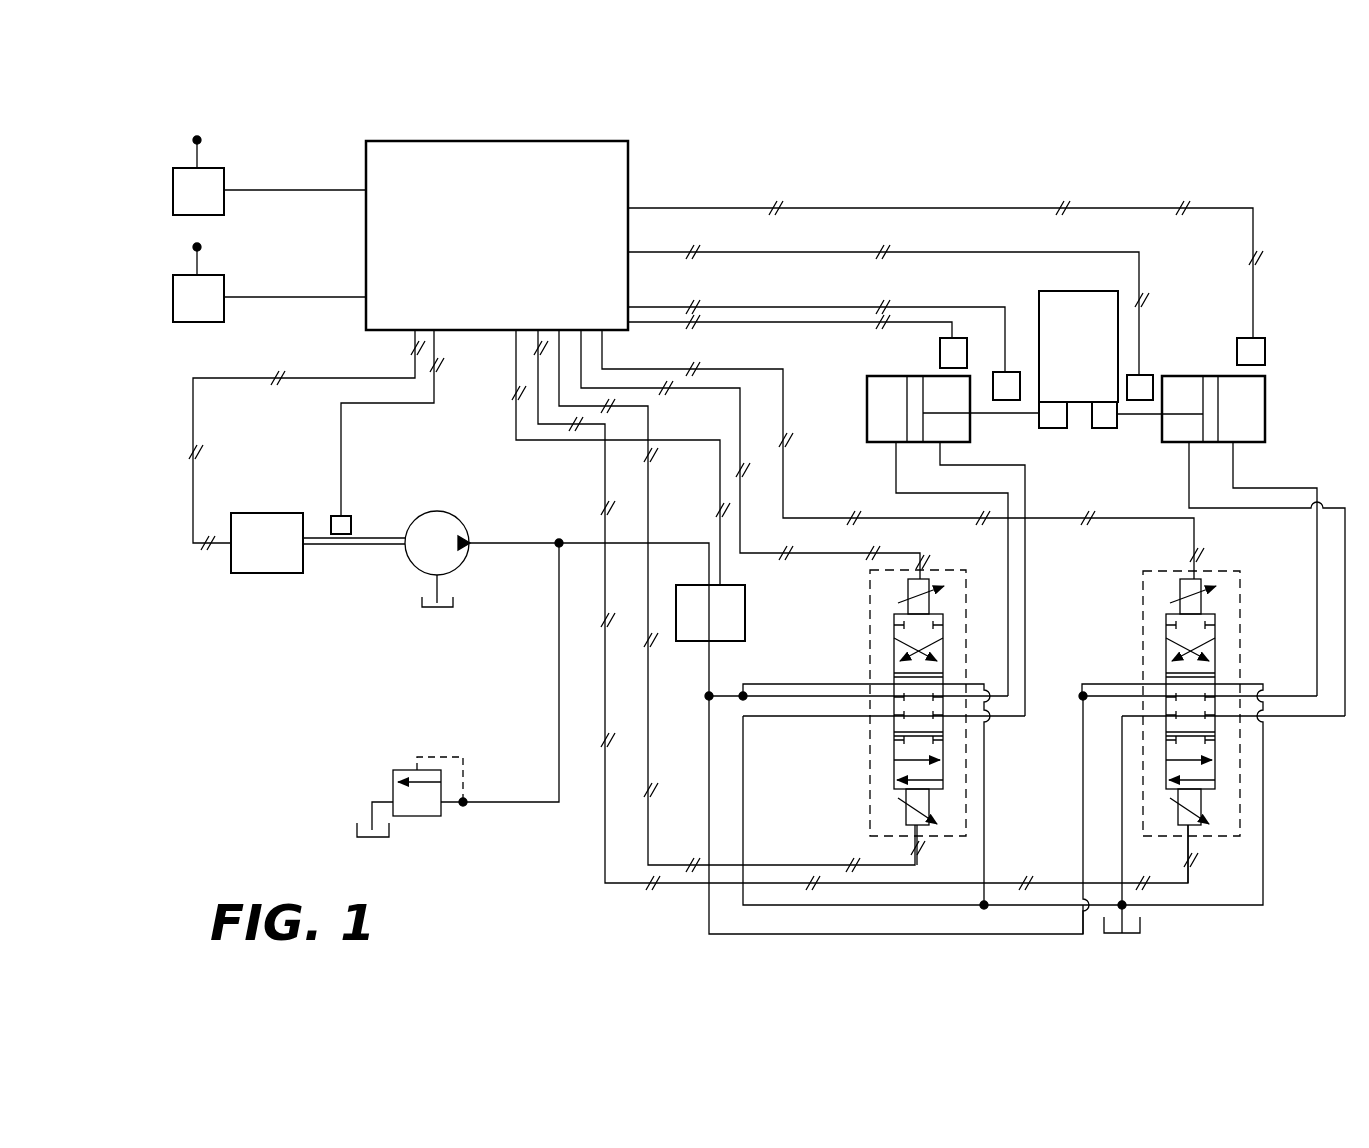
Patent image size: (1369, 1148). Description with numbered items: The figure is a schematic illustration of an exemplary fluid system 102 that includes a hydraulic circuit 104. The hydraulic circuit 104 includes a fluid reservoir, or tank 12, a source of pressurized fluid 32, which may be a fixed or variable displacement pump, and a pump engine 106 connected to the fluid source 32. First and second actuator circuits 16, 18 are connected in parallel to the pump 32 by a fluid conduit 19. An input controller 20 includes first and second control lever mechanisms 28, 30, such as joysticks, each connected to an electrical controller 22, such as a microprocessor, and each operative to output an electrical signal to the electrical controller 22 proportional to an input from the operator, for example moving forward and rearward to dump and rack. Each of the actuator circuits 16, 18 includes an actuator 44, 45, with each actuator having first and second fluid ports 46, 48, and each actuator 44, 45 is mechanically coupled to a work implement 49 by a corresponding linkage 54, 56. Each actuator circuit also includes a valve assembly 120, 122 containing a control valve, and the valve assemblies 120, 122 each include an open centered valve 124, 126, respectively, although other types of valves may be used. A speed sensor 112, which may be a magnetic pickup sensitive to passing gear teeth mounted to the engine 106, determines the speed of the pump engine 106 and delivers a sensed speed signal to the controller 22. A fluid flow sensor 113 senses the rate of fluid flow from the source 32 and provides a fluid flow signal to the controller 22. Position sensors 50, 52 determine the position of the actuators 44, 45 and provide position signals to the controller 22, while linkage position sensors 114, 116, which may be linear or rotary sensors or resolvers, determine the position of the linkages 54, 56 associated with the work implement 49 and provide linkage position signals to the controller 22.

The fluid system 102 is at (160, 127).
The input controller 20 is at (269, 235).
The first control lever mechanism 28 is at (224, 182).
The second control lever mechanism 30 is at (213, 322).
The electrical controller 22 is at (505, 239).
The hydraulic circuit 104 is at (879, 199).
The first actuator circuit 16 is at (881, 387).
The second actuator circuit 18 is at (1249, 324).
The actuator 44 is at (880, 376).
The actuator 45 is at (1178, 376).
The first fluid port 46 is at (886, 442).
The second fluid port 48 is at (940, 442).
The work implement 49 is at (1066, 366).
The position sensor 50 is at (983, 340).
The position sensor 52 is at (1266, 345).
The linkage 54 is at (1052, 428).
The linkage 56 is at (1108, 428).
The linkage position sensor 114 is at (1010, 370).
The linkage position sensor 116 is at (1148, 373).
The pump engine 106 is at (275, 573).
The speed sensor 112 is at (331, 522).
The source of pressurized fluid 32 is at (408, 520).
The fluid conduit 19 is at (495, 543).
The tank 12 is at (453, 600).
The fluid flow sensor 113 is at (745, 605).
The valve assembly 122 is at (878, 715).
The open centered valve 124 is at (894, 635).
The valve assembly 120 is at (1204, 727).
The open centered valve 126 is at (1166, 612).